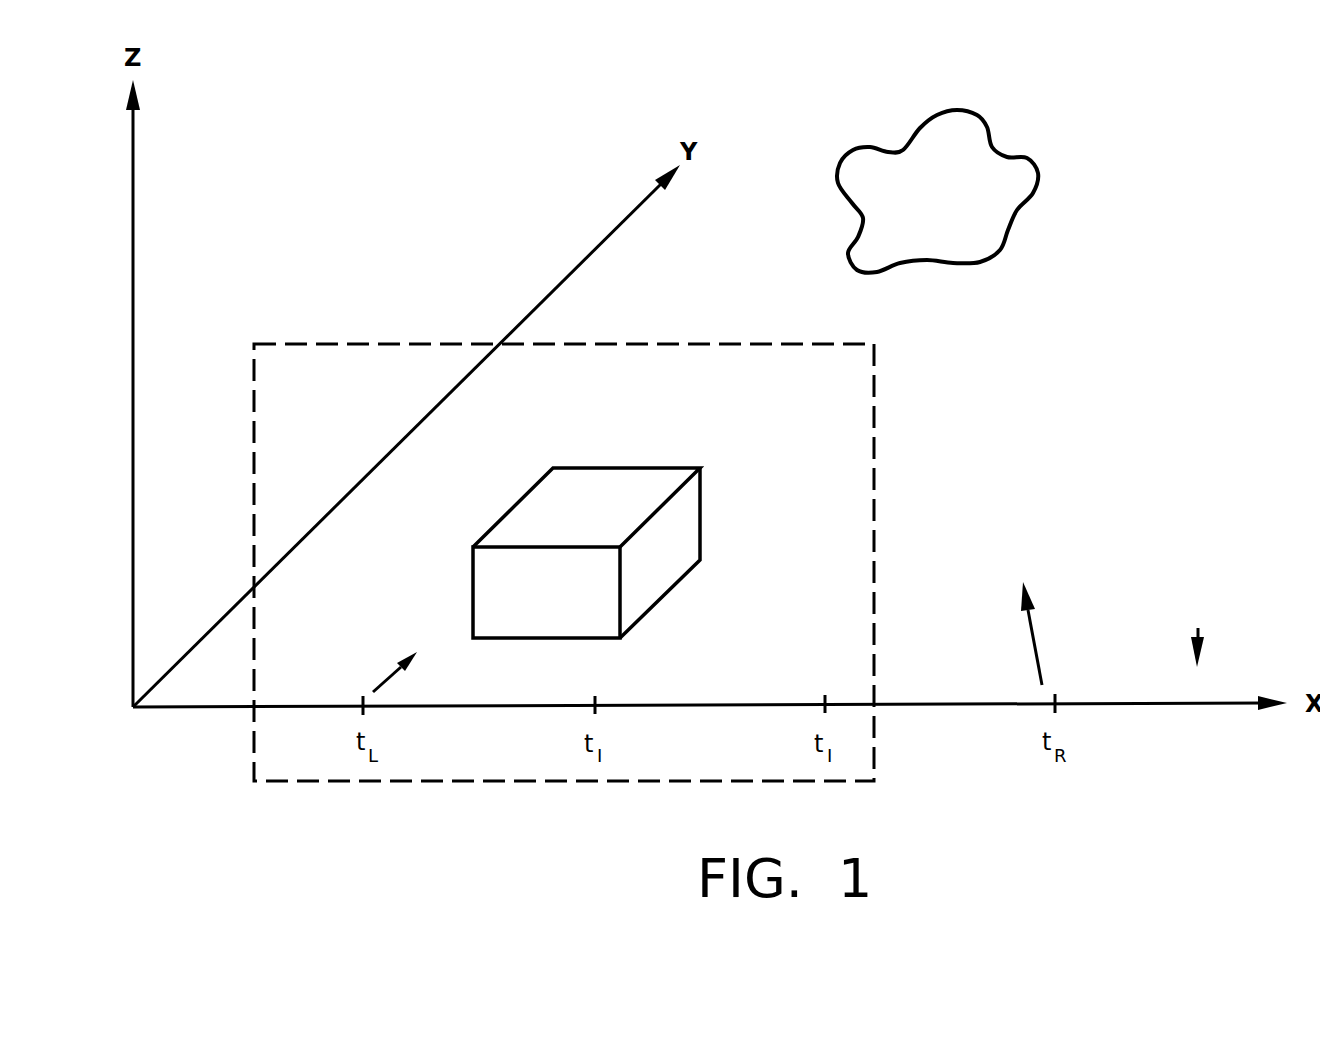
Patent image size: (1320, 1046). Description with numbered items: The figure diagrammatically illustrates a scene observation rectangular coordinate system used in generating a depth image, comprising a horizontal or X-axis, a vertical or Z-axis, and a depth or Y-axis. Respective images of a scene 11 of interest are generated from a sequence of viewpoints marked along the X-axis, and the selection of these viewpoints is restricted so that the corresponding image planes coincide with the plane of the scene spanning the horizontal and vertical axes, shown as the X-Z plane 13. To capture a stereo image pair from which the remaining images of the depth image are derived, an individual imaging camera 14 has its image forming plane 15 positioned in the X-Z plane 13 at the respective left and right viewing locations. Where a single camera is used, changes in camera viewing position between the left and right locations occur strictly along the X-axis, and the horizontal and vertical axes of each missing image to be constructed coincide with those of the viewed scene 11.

The scene 11 is at (963, 110).
The X-Z plane 13 is at (1198, 640).
The imaging camera 14 is at (625, 467).
The image forming plane 15 is at (548, 782).